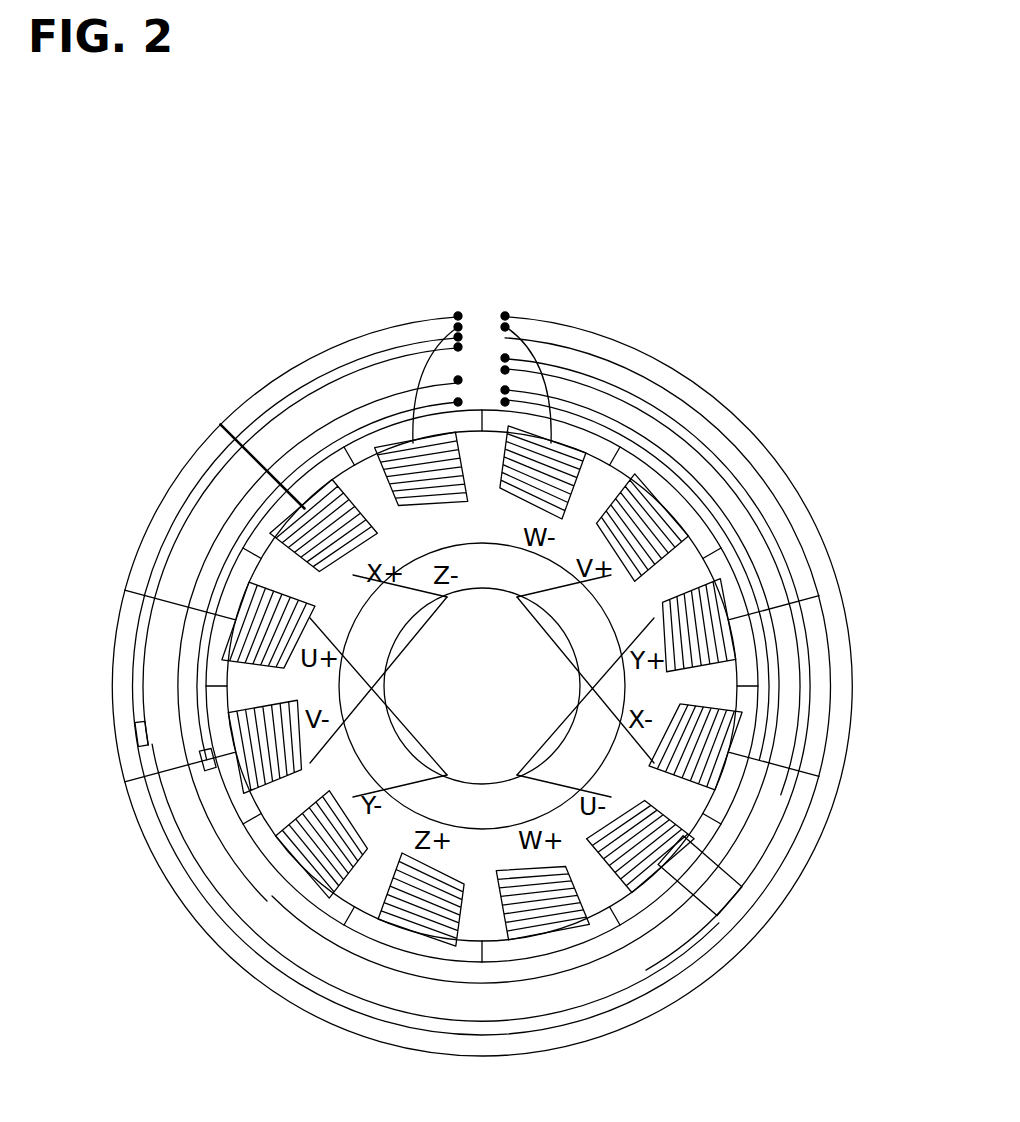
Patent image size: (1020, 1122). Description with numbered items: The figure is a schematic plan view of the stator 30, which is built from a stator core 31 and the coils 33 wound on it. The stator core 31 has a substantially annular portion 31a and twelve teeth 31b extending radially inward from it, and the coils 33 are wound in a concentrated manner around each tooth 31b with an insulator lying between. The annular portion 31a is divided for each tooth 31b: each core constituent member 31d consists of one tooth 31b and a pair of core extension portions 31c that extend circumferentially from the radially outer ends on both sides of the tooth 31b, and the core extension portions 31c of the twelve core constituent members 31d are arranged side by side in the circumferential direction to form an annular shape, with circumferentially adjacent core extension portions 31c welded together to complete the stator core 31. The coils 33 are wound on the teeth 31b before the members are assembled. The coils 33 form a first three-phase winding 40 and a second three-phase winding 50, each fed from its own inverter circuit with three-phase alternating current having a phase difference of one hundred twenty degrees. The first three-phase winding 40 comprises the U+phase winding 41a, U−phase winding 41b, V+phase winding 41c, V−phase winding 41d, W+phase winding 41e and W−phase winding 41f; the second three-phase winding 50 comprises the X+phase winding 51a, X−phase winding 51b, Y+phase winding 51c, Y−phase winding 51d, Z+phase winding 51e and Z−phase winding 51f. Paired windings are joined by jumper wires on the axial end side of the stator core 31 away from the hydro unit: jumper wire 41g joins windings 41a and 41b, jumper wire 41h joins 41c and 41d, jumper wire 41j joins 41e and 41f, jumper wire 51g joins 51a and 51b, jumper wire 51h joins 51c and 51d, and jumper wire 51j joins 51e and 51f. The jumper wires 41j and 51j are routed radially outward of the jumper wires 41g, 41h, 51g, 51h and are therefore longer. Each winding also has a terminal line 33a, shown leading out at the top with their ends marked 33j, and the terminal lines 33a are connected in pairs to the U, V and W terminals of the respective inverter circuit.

The stator 30 is at (770, 380).
The stator core 31 is at (752, 588).
The annular portion 31a is at (732, 548).
The teeth 31b is at (650, 452).
The core extension portions 31c is at (335, 460).
The core constituent member 31d is at (220, 422).
The coils 33 is at (483, 450).
The terminal line 33a is at (150, 752).
The terminal 33j is at (423, 368).
The first three-phase winding 40 is at (600, 430).
The U+phase winding 41a is at (210, 643).
The U−phase winding 41b is at (740, 900).
The V+phase winding 41c is at (697, 452).
The V−phase winding 41d is at (260, 796).
The W+phase winding 41e is at (575, 935).
The W−phase winding 41f is at (566, 447).
The jumper wire 41g is at (397, 733).
The jumper wire 41h is at (420, 617).
The jumper wire 41j is at (558, 565).
The second three-phase winding 50 is at (380, 650).
The X+phase winding 51a is at (255, 540).
The X−phase winding 51b is at (727, 742).
The Y+phase winding 51c is at (737, 648).
The Y−phase winding 51d is at (290, 838).
The Z+phase winding 51e is at (422, 920).
The Z−phase winding 51f is at (330, 440).
The jumper wire 51g is at (563, 633).
The jumper wire 51h is at (563, 728).
The jumper wire 51j is at (403, 810).